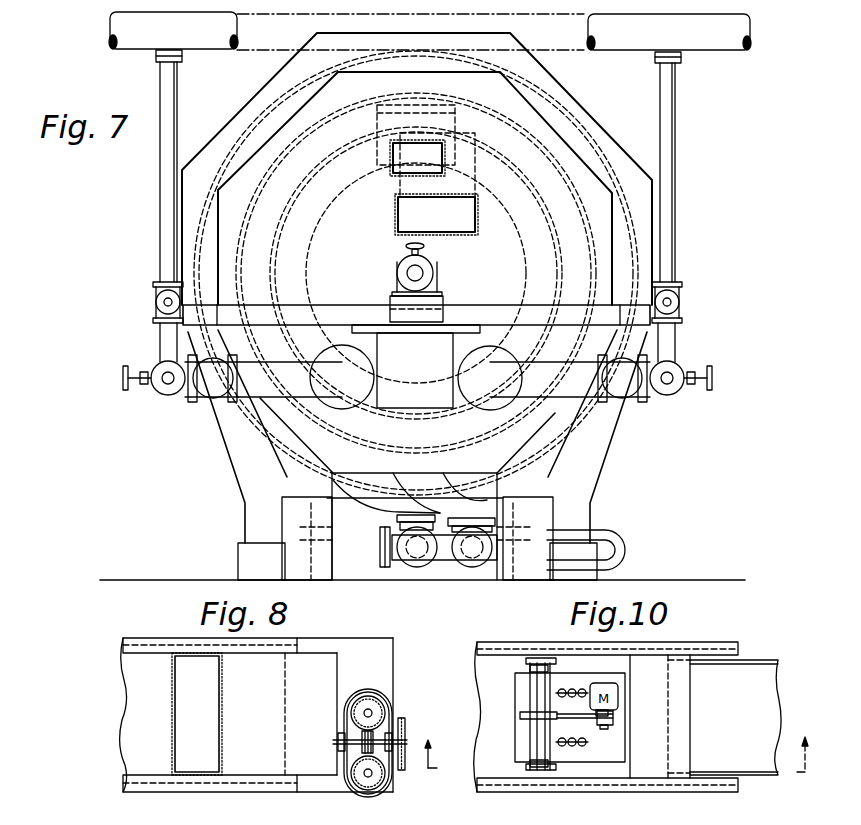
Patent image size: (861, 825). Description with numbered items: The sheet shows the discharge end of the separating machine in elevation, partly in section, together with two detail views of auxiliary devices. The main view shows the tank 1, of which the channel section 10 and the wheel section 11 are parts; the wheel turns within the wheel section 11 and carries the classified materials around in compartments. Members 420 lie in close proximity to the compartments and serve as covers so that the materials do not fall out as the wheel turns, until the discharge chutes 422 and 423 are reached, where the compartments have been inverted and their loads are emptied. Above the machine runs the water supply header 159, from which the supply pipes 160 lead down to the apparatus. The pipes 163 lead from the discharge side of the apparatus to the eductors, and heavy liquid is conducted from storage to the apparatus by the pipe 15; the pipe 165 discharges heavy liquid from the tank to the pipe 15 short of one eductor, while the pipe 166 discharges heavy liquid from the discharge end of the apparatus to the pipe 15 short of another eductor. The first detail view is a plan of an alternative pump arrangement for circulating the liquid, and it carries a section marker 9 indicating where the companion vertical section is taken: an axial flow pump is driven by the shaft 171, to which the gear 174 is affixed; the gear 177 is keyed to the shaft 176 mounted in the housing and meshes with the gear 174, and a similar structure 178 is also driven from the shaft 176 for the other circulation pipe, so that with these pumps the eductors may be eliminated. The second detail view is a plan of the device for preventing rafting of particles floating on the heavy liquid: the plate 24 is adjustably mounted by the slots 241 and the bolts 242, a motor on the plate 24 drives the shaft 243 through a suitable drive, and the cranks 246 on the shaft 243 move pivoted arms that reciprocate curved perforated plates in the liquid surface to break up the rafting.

In FIG. 7, the water supply header 159 is at (630, 40).
In FIG. 7, the tank 1 is at (573, 130).
In FIG. 7, the supply pipes 160 is at (160, 241).
In FIG. 7, the cover members 420 is at (342, 112).
In FIG. 7, the discharge chute 423 is at (392, 160).
In FIG. 7, the discharge chute 422 is at (476, 226).
In FIG. 7, the pipes leading to eductors 163 is at (322, 406).
In FIG. 7, the wheel section of the tank 11 is at (247, 440).
In FIG. 8, the wheel section of the tank 11 is at (438, 764).
In FIG. 10, the wheel section of the tank 11 is at (792, 763).
In FIG. 7, the heavy liquid discharge pipe 166 is at (457, 492).
In FIG. 7, the heavy liquid discharge pipe 165 is at (397, 518).
In FIG. 7, the heavy liquid pipe 15 is at (626, 542).
In FIG. 8, the channel section of the tank 10 is at (146, 640).
In FIG. 10, the channel section of the tank 10 is at (490, 645).
In FIG. 8, the bottom rail 9 is at (126, 760).
In FIG. 8, the gear 177 is at (355, 740).
In FIG. 8, the similar pump drive structure 178 is at (371, 711).
In FIG. 8, the shaft 171 is at (369, 775).
In FIG. 8, the gear 174 is at (384, 780).
In FIG. 8, the shaft 176 is at (385, 738).
In FIG. 10, the plate 24 is at (522, 689).
In FIG. 10, the shaft 243 is at (537, 695).
In FIG. 10, the cranks 246 is at (535, 658).
In FIG. 10, the slots 241 is at (584, 690).
In FIG. 10, the bolts 242 is at (582, 745).